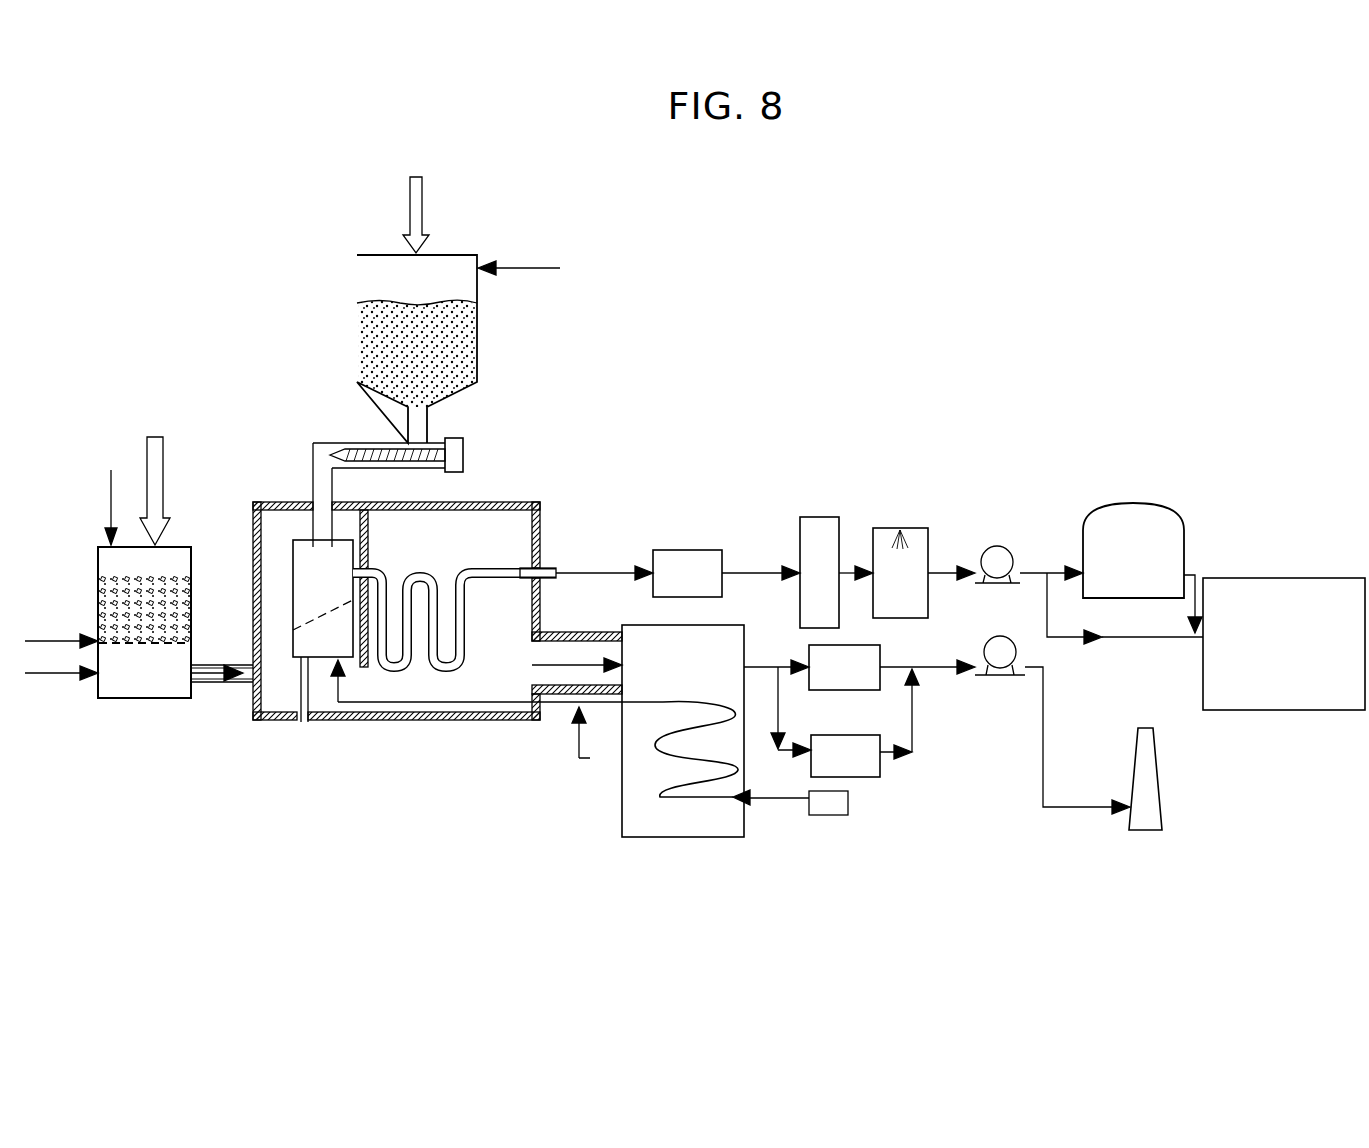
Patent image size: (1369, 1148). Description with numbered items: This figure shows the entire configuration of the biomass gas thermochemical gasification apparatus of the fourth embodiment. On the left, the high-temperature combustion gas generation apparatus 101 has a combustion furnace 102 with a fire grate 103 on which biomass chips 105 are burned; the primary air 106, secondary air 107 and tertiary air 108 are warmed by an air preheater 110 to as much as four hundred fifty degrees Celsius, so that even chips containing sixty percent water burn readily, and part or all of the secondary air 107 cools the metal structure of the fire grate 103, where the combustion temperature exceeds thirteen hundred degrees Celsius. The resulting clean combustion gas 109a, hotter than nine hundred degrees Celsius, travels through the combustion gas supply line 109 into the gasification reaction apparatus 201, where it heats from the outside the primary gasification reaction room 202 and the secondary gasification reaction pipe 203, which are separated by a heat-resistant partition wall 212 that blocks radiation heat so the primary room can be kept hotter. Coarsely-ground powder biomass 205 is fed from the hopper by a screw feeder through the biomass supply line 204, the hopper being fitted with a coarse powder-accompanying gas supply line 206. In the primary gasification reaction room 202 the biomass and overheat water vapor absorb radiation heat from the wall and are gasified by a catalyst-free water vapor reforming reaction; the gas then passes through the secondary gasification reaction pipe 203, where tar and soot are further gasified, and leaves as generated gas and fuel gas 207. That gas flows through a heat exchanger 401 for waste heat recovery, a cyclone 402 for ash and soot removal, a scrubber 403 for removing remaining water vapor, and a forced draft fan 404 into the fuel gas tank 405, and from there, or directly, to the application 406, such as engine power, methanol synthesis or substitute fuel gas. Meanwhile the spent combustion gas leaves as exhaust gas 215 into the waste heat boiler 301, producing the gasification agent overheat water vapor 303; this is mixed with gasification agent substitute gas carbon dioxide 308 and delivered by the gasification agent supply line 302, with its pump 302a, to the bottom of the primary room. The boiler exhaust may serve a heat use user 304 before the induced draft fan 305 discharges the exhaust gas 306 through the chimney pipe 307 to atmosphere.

The high-temperature combustion gas generation apparatus 101 is at (135, 640).
The combustion furnace 102 is at (190, 543).
The fire grate 103 is at (125, 643).
The biomass chip 105 is at (175, 440).
The primary air 106 is at (112, 490).
The secondary air 107 is at (40, 640).
The tertiary air 108 is at (40, 675).
The combustion gas supply line 109 is at (230, 664).
The combustion gas 109a is at (205, 682).
The air preheater 110 is at (865, 778).
The gasification reaction apparatus 201 is at (388, 765).
The primary gasification reaction room 202 is at (293, 577).
The secondary gasification reaction pipe 203 is at (385, 570).
The biomass supply line 204 is at (490, 435).
The coarsely-ground powder biomass 205 is at (425, 190).
The coarse powder-accompanying gas supply line 206 is at (547, 262).
The generated gas and fuel gas 207 is at (583, 572).
The heat-resistant partition wall 212 is at (364, 548).
The exhaust gas 215 is at (565, 706).
The waste heat boiler 301 is at (645, 840).
The gasification agent supply line 302 is at (780, 800).
The feed water pump 302a is at (826, 815).
The gasification agent (overheat water vapor) 303 is at (640, 706).
The heat use user 304 is at (865, 690).
The induced draft fan 305 is at (1005, 676).
The exhaust gas 306 is at (1070, 806).
The chimney pipe 307 is at (1160, 810).
The gasification agent substitute gas (carbon dioxide) 308 is at (575, 758).
The heat exchanger 401 is at (685, 550).
The cyclone 402 is at (812, 517).
The scrubber 403 is at (885, 528).
The forced draft fan 404 is at (995, 545).
The fuel gas tank 405 is at (1138, 503).
The application 406 is at (1203, 662).